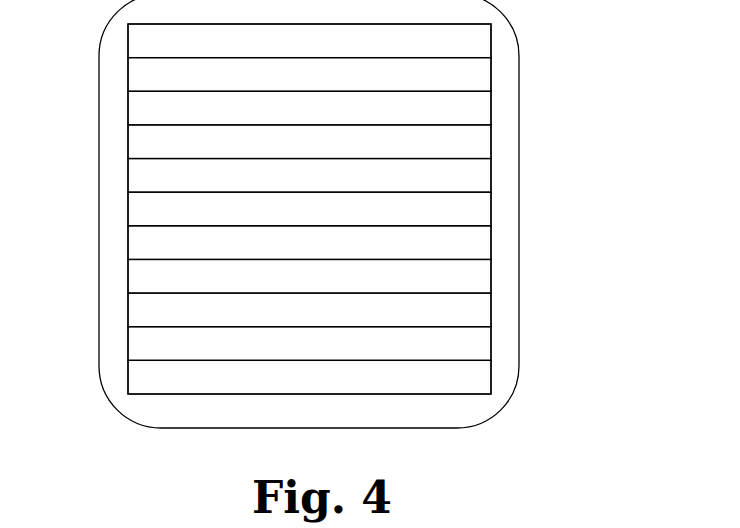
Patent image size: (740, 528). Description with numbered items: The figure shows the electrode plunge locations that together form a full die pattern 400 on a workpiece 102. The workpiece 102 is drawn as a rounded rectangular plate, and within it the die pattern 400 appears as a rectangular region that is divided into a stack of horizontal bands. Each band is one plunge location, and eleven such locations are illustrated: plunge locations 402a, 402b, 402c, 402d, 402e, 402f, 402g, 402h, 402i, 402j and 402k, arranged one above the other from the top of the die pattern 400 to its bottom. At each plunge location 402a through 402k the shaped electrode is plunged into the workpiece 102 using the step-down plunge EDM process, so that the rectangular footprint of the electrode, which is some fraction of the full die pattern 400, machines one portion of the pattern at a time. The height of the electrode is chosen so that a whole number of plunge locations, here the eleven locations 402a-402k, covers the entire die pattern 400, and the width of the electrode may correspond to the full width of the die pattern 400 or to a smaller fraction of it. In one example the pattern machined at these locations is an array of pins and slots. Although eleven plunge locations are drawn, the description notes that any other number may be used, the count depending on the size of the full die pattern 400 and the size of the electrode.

The workpiece 102 is at (180, 410).
The die pattern 400 is at (127, 169).
The plunge location 402a is at (473, 40).
The plunge location 402b is at (473, 70).
The plunge location 402c is at (473, 108).
The plunge location 402d is at (473, 141).
The plunge location 402e is at (473, 180).
The plunge location 402f is at (473, 210).
The plunge location 402g is at (473, 252).
The plunge location 402h is at (473, 283).
The plunge location 402i is at (473, 318).
The plunge location 402j is at (473, 349).
The plunge location 402k is at (473, 381).